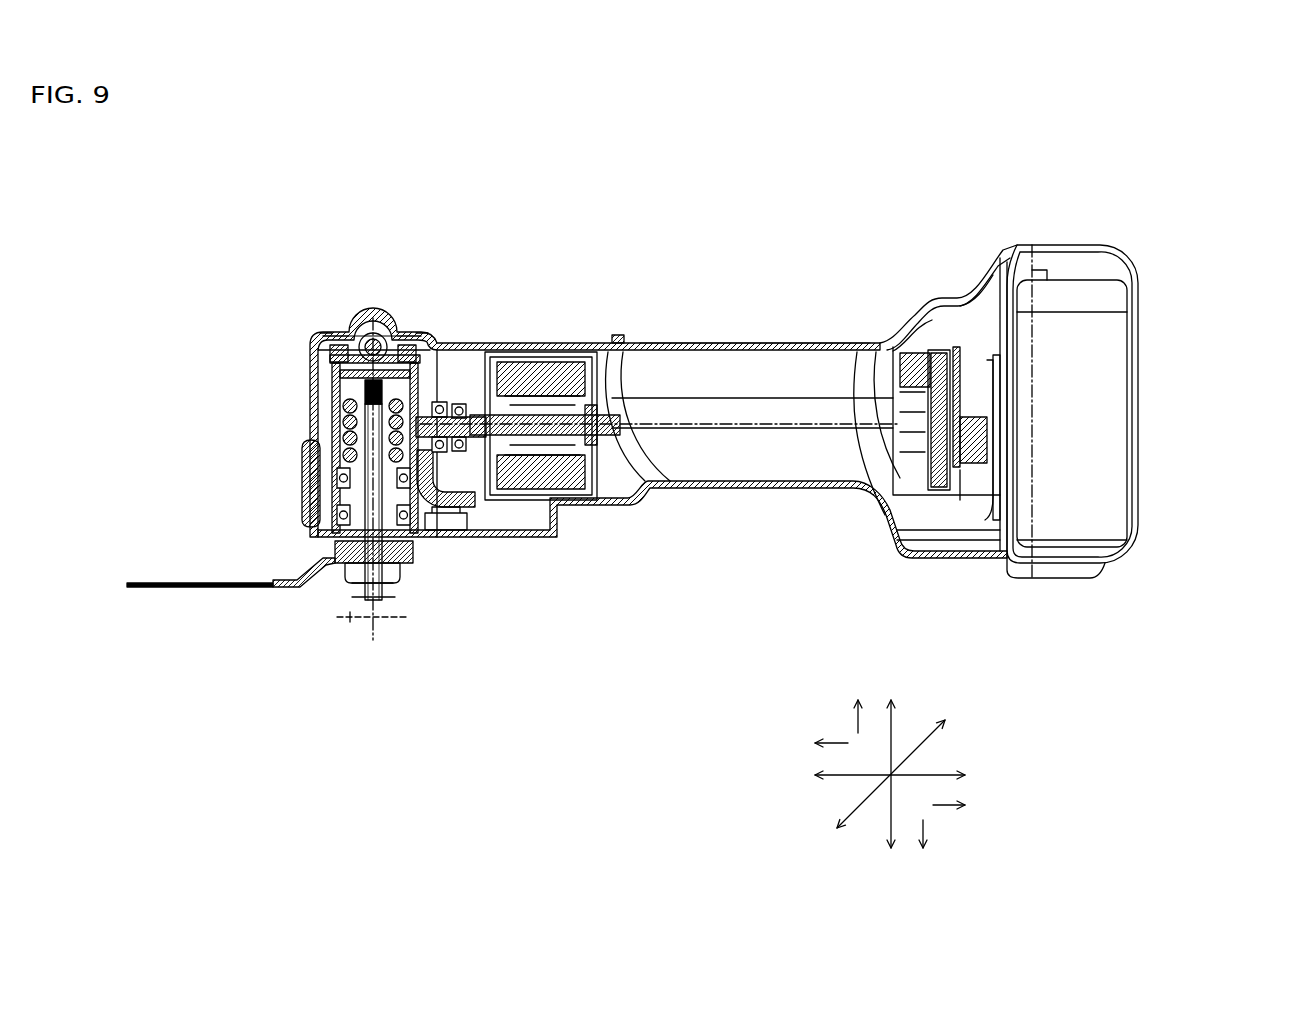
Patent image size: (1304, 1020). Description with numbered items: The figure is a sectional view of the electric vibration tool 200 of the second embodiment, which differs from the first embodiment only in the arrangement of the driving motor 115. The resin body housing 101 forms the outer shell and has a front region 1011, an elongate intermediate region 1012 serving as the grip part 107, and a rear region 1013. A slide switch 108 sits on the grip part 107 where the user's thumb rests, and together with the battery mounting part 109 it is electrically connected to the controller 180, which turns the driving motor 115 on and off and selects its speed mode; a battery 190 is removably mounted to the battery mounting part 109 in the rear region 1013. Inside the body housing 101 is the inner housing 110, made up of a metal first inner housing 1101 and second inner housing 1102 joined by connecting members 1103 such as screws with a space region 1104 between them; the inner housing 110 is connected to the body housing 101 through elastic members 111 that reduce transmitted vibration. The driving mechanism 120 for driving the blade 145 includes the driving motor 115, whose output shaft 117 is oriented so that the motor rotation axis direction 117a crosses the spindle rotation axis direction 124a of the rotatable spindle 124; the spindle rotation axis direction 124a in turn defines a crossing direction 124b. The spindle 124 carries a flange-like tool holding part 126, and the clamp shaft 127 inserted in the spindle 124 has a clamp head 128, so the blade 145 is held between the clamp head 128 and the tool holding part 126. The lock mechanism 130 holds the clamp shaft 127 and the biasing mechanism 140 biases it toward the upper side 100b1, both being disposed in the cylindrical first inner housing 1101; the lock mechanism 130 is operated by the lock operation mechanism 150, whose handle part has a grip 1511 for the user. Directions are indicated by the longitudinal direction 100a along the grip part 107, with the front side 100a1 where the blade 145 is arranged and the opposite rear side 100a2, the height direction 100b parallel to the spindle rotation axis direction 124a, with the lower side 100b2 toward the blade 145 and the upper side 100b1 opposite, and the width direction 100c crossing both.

The electric vibration tool 200 is at (266, 340).
The inner housing 110 is at (328, 378).
The first inner housing 1101 is at (318, 398).
The second inner housing 1102 is at (396, 326).
The connecting members 1103 is at (430, 331).
The space region 1104 is at (372, 316).
The front region 1011 is at (386, 306).
The intermediate region 1012 is at (760, 317).
The rear region 1013 is at (977, 244).
The body housing 101 is at (334, 330).
The lock operation mechanism 150 is at (352, 318).
The lock mechanism 130 is at (325, 408).
The biasing mechanism 140 is at (320, 425).
The elastic members 111 is at (318, 448).
The clamp shaft 127 is at (308, 490).
The grip 1511 is at (310, 540).
The spindle 124 is at (325, 543).
The spindle rotation axis direction 124a is at (370, 597).
The crossing direction 124b is at (352, 622).
The tool holding part 126 is at (410, 566).
The clamp head 128 is at (378, 586).
The blade 145 is at (196, 592).
The driving mechanism 120 is at (522, 502).
The driving motor 115 is at (525, 355).
The output shaft 117 is at (612, 500).
The motor rotation axis direction 117a is at (670, 485).
The grip part 107 is at (760, 489).
The slide switch 108 is at (620, 334).
The controller 180 is at (937, 437).
The battery mounting part 109 is at (993, 523).
The battery 190 is at (1105, 525).
The longitudinal direction 100a is at (845, 777).
The front side 100a1 is at (838, 738).
The rear side 100a2 is at (945, 810).
The height direction 100b is at (893, 730).
The upper side 100b1 is at (852, 720).
The lower side 100b2 is at (928, 825).
The width direction 100c is at (863, 805).